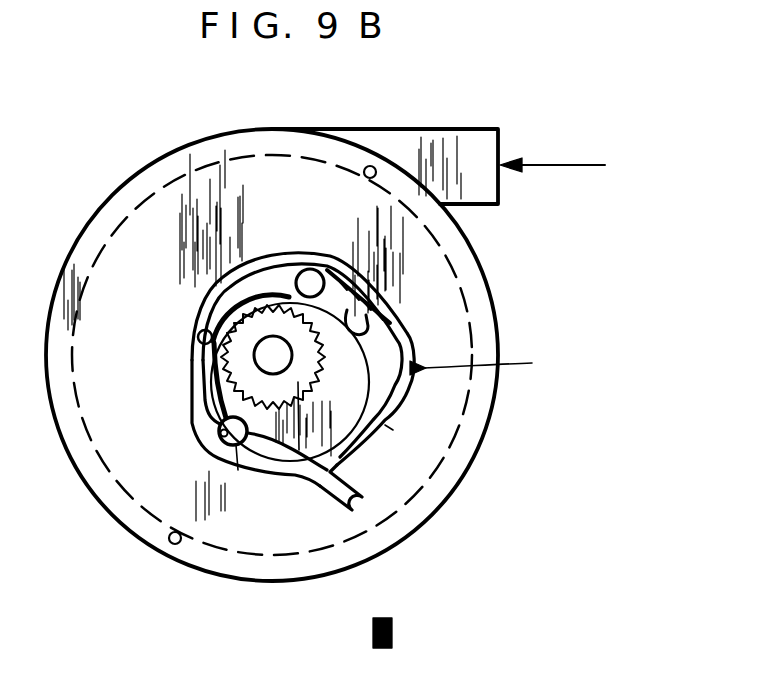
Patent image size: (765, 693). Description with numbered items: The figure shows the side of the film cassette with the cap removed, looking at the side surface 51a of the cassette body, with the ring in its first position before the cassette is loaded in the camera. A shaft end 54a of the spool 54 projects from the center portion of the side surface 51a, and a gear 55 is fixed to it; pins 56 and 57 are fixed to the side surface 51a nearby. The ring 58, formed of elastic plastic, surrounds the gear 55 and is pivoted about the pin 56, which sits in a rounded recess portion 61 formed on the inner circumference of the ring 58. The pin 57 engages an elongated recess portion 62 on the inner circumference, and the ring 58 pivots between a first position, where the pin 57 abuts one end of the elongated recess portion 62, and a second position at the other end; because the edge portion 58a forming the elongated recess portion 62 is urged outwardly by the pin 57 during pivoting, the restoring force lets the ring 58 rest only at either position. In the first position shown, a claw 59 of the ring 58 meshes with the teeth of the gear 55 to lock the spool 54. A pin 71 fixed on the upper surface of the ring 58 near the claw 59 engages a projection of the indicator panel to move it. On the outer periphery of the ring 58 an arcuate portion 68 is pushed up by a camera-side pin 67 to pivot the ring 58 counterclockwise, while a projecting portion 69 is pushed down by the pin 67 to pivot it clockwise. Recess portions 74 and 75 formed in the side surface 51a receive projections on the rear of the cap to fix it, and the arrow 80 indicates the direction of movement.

The side surface 51a is at (175, 178).
The recess portion 75 is at (372, 166).
The direction arrow 80 is at (576, 165).
The pin 57 is at (310, 269).
The edge portion 58a is at (373, 283).
The claw 59 is at (203, 316).
The pin 71 is at (196, 332).
The elongated recess portion 62 is at (368, 326).
The shaft end 54a is at (272, 355).
The ring 58 is at (383, 369).
The spool 54 is at (300, 391).
The rounded recess portion 61 is at (219, 430).
The arcuate portion 68 is at (385, 425).
The pin 56 is at (238, 470).
The gear 55 is at (299, 450).
The projecting portion 69 is at (370, 508).
The recess portion 74 is at (170, 543).
The pin 67 is at (395, 631).